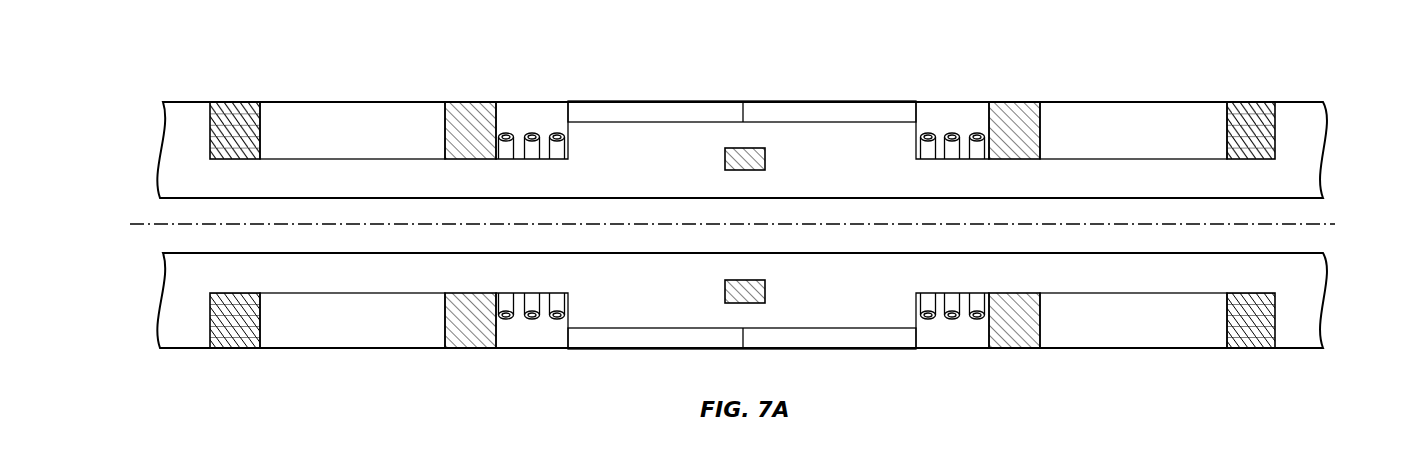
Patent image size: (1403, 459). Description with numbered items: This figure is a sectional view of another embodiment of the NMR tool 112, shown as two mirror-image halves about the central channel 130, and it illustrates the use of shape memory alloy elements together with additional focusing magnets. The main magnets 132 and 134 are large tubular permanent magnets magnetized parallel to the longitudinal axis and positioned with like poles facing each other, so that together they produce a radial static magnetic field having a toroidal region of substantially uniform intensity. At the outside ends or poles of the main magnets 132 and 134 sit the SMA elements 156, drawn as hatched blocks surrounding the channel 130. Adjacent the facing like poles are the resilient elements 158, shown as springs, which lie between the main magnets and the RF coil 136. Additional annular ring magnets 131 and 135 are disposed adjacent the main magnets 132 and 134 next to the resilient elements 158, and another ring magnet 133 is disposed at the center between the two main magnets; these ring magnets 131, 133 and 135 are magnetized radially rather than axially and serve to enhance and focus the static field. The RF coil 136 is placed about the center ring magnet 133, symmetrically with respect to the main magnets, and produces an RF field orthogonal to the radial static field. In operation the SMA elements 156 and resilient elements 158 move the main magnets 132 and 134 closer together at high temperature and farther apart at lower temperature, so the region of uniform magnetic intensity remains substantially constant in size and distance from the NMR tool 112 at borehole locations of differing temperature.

The NMR tool 112 is at (1311, 82).
The channel 130 is at (758, 221).
The additional ring magnet 131 is at (488, 102).
The main tubular magnet 132 is at (364, 351).
The center ring magnet 133 is at (766, 150).
The main tubular magnet 134 is at (1148, 351).
The additional ring magnet 135 is at (1036, 102).
The RF coil 136 is at (656, 101).
The SMA elements 156 is at (236, 104).
The resilient elements 158 is at (533, 322).